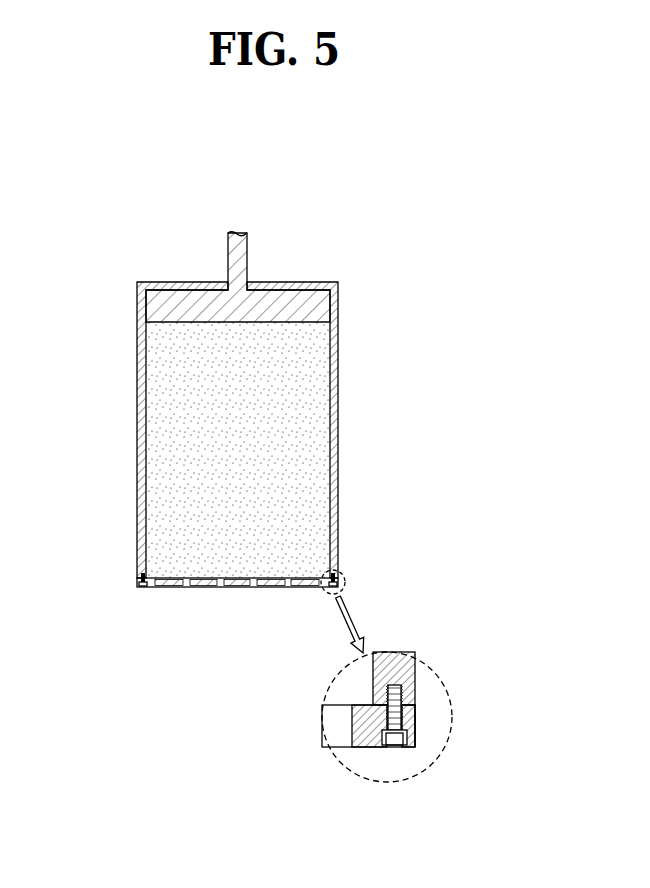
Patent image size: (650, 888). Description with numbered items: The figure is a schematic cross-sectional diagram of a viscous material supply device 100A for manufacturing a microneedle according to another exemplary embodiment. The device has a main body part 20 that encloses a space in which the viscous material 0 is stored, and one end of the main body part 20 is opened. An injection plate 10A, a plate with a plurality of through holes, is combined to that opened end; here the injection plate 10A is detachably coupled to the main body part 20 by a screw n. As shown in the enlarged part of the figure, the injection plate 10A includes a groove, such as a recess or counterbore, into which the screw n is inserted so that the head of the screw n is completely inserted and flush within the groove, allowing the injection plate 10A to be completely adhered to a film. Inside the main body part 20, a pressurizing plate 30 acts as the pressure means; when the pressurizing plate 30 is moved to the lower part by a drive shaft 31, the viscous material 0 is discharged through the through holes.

The viscous material supply device 100A is at (129, 260).
The main body part 20 is at (143, 410).
The pressurizing plate 30 is at (318, 308).
The drive shaft 31 is at (250, 257).
The viscous material 0 is at (317, 441).
The injection plate 10A is at (170, 582).
The screw n is at (402, 717).